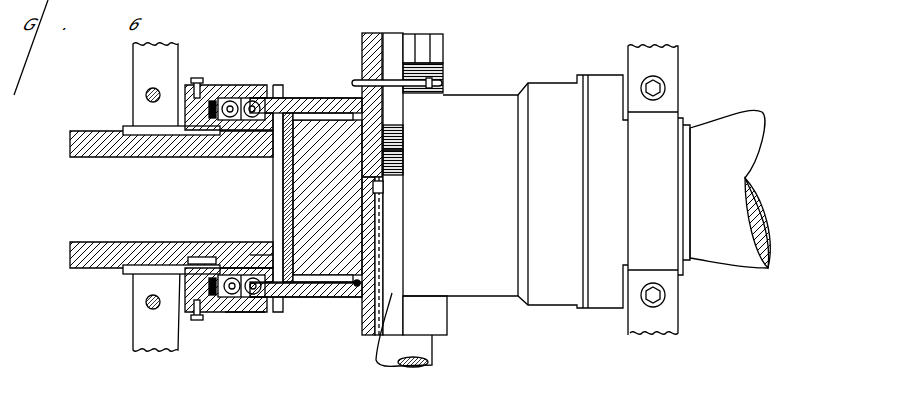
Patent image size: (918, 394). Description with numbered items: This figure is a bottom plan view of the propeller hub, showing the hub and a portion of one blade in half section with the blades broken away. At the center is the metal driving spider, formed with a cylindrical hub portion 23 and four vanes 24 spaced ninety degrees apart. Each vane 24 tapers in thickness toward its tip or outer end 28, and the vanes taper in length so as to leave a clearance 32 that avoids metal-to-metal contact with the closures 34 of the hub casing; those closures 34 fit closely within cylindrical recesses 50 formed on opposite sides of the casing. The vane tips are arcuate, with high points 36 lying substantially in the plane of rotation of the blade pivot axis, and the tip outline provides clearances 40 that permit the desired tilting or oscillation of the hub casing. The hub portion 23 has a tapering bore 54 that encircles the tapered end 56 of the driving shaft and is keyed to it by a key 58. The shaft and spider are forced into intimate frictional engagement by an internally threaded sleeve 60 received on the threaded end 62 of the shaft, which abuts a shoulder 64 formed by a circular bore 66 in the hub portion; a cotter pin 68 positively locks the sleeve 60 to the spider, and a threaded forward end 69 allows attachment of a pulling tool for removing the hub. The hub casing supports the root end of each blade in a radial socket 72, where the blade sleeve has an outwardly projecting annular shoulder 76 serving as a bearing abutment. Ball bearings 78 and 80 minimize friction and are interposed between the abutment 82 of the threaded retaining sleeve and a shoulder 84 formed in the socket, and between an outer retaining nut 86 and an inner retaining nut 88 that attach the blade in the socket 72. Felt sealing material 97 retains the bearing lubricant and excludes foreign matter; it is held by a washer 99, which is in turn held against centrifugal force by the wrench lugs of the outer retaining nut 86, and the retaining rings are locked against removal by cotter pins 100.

The cylindrical hub portion 23 is at (358, 97).
The vanes 24 is at (318, 192).
The tip or outer end 28 is at (290, 208).
The clearance 32 is at (313, 98).
The closures 34 is at (300, 100).
The high points 36 is at (293, 202).
The clearances 40 is at (270, 150).
The cylindrical recesses 50 is at (290, 100).
The tapering bore 54 is at (357, 288).
The tapered end 56 is at (372, 338).
The key 58 is at (382, 248).
The internally threaded sleeve 60 is at (403, 152).
The threaded end 62 is at (403, 130).
The shoulder 64 is at (385, 192).
The circular bore 66 is at (403, 138).
The cotter pin 68 is at (445, 83).
The threaded forward end 69 is at (447, 70).
The radial sockets 72 is at (240, 308).
The annular shoulder 76 is at (263, 253).
The ball bearing 78 is at (237, 100).
The ball bearing 80 is at (252, 100).
The abutment 82 is at (276, 300).
The shoulder 84 is at (255, 312).
The outer retaining nut 86 is at (194, 305).
The inner retaining nut 88 is at (203, 262).
The felt sealing material 97 is at (210, 300).
The washer 99 is at (187, 288).
The cotter pins 100 is at (183, 78).